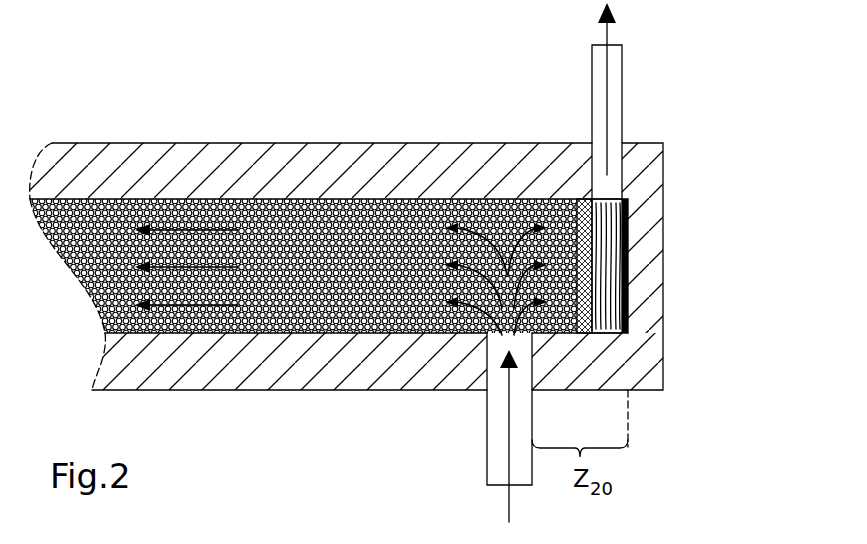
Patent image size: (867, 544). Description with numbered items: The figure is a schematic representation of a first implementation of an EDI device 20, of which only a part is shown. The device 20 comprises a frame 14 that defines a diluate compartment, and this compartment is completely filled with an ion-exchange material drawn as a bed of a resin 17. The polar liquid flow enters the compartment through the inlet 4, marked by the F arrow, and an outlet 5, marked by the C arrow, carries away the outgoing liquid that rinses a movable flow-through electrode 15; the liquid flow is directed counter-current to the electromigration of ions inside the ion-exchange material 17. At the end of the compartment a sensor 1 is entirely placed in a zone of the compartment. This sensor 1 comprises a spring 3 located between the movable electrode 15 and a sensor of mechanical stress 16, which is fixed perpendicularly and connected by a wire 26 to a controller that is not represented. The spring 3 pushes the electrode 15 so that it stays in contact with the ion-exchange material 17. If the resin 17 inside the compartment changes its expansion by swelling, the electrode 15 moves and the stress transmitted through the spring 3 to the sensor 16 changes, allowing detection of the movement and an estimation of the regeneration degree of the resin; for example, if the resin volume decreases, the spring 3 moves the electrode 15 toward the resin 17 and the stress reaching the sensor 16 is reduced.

The EDI device 20 is at (172, 86).
The sensor 1 is at (648, 210).
The frame 14 is at (280, 390).
The bed of a resin 17 is at (283, 199).
The movable flow-through electrode 15 is at (585, 333).
The spring 3 is at (598, 333).
The sensor of mechanical stress 16 is at (632, 302).
The wire 26 is at (628, 265).
The outlet 5 is at (591, 98).
The inlet 4 is at (487, 430).